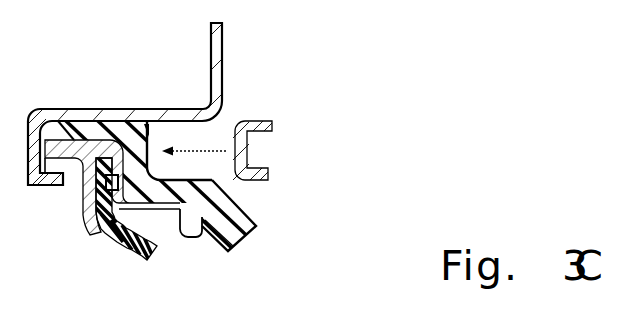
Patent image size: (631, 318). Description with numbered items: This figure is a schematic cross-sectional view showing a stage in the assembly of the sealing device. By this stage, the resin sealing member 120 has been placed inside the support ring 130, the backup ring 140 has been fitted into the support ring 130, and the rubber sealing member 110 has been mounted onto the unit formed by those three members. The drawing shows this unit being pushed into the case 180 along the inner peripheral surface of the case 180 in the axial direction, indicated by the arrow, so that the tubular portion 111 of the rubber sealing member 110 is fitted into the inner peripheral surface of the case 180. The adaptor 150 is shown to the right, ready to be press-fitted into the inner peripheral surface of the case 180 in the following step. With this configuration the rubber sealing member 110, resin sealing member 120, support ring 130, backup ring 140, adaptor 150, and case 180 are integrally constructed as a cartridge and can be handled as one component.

The rubber sealing member 110 is at (256, 211).
The tubular portion 111 is at (147, 126).
The resin sealing member 120 is at (119, 266).
The support ring 130 is at (184, 228).
The backup ring 140 is at (88, 220).
The adaptor 150 is at (252, 116).
The case 180 is at (118, 106).